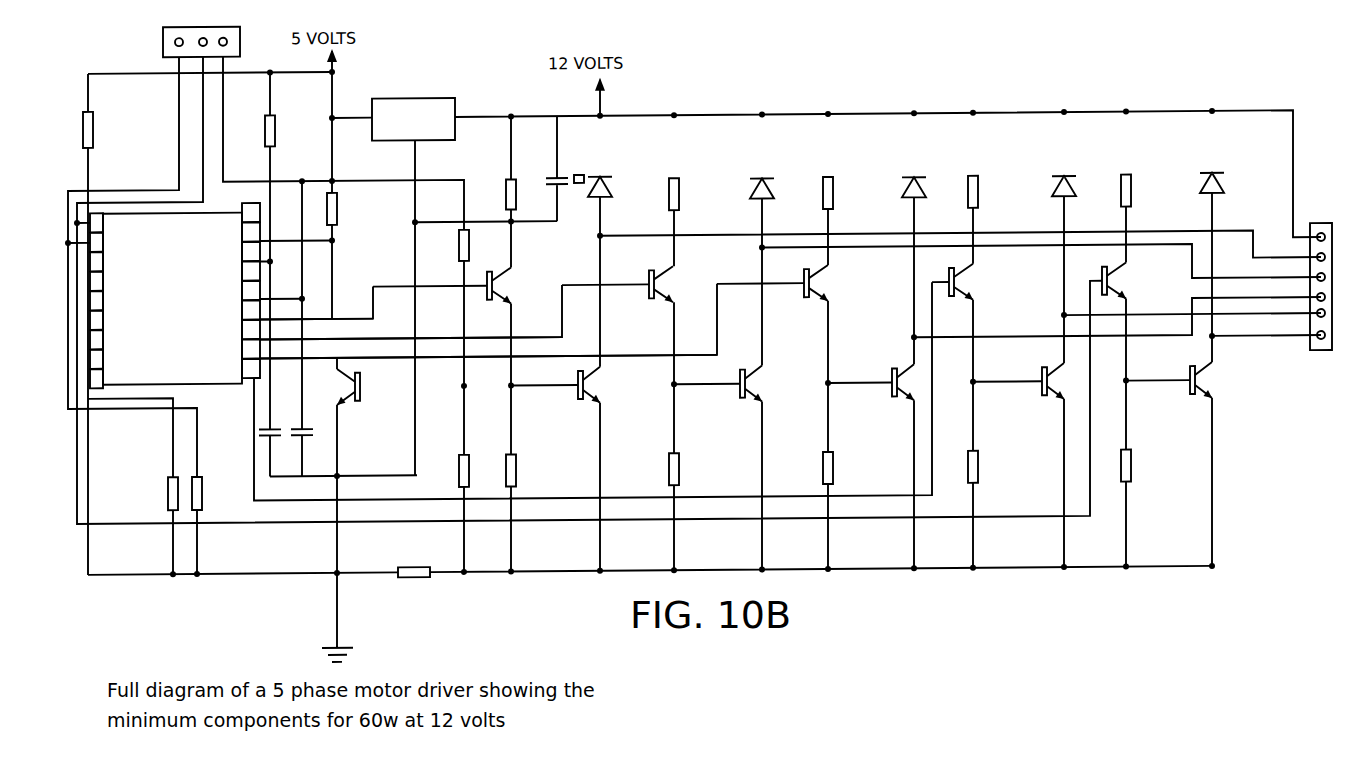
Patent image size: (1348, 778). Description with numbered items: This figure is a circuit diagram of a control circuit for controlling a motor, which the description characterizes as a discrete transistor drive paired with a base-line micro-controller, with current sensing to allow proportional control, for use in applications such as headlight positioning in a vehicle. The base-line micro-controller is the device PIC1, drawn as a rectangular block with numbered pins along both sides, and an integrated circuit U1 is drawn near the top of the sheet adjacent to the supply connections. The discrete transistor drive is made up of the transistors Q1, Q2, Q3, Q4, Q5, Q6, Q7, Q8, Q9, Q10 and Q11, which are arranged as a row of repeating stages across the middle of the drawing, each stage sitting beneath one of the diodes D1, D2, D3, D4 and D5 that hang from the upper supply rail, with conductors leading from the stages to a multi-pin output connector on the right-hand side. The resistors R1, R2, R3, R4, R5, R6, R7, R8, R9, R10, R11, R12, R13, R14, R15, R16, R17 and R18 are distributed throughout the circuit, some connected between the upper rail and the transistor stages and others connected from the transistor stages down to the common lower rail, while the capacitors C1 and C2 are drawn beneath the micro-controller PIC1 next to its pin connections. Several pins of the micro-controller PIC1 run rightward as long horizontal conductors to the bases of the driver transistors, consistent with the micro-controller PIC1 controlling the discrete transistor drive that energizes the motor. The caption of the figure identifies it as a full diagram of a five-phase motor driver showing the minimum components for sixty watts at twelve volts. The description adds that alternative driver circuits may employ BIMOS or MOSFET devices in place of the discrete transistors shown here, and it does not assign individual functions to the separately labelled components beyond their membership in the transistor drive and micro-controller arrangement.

The PIC microcontroller 1916C54 PIC1 is at (173, 225).
The 7805 voltage regulator U1 is at (410, 110).
The resistor R1 is at (505, 190).
The resistor R2 is at (413, 571).
The resistor R3 is at (351, 211).
The resistor R4 is at (530, 470).
The resistor R5 is at (445, 471).
The resistor R6 is at (462, 250).
The resistor R7 is at (691, 171).
The resistor R8 is at (693, 469).
The resistor R9 is at (846, 191).
The resistor R10 is at (847, 469).
The resistor R11 is at (105, 132).
The resistor R12 is at (287, 130).
The resistor R13 is at (216, 494).
The resistor R14 is at (154, 494).
The resistor R15 is at (993, 190).
The resistor R16 is at (993, 468).
The resistor R17 is at (1144, 188).
The resistor R18 is at (1146, 468).
The capacitor C1 is at (313, 433).
The capacitor C2 is at (259, 433).
The diode D1 is at (624, 164).
The diode D2 is at (786, 166).
The diode D3 is at (906, 178).
The diode D4 is at (1037, 159).
The diode D5 is at (1243, 181).
The NPN transistor Q1 is at (610, 383).
The NPN transistor Q2 is at (518, 287).
The NPN transistor Q3 is at (372, 375).
The NPN transistor Q4 is at (773, 383).
The NPN transistor Q5 is at (645, 297).
The NPN transistor Q6 is at (885, 393).
The NPN transistor Q7 is at (838, 283).
The NPN transistor Q8 is at (1036, 394).
The NPN transistor Q9 is at (982, 281).
The NPN transistor Q10 is at (1222, 383).
The NPN transistor Q11 is at (1134, 284).